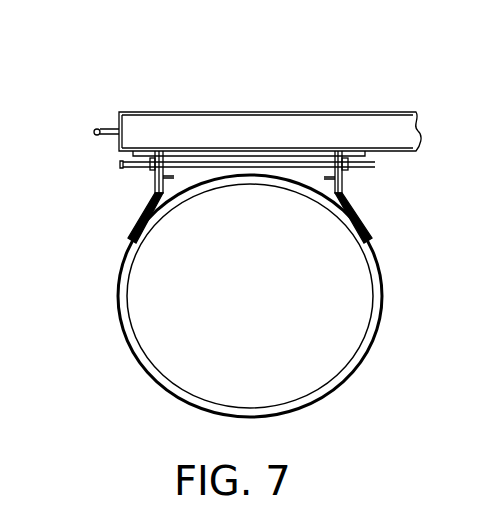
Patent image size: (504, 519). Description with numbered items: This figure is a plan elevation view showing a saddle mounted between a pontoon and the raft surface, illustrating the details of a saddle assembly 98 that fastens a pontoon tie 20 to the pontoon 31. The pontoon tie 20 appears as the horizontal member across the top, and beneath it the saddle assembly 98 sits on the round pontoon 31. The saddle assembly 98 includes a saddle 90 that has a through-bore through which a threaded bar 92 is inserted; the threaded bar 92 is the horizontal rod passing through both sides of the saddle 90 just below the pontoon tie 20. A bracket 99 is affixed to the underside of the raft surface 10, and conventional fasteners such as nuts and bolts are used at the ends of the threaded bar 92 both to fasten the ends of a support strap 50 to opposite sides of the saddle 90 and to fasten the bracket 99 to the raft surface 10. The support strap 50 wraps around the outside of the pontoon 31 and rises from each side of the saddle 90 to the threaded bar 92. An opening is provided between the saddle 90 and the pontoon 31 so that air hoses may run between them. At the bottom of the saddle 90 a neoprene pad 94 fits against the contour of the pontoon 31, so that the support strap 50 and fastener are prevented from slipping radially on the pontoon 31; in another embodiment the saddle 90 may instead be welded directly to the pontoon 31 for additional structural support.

The raft surface 10 is at (90, 84).
The pontoon tie 20 is at (248, 117).
The neoprene pad 94 is at (279, 183).
The bracket 99 is at (118, 152).
The threaded bar 92 is at (120, 165).
The saddle assembly 98 is at (137, 190).
The saddle 90 is at (340, 191).
The support strap 50 is at (382, 292).
The pontoon 31 is at (360, 312).